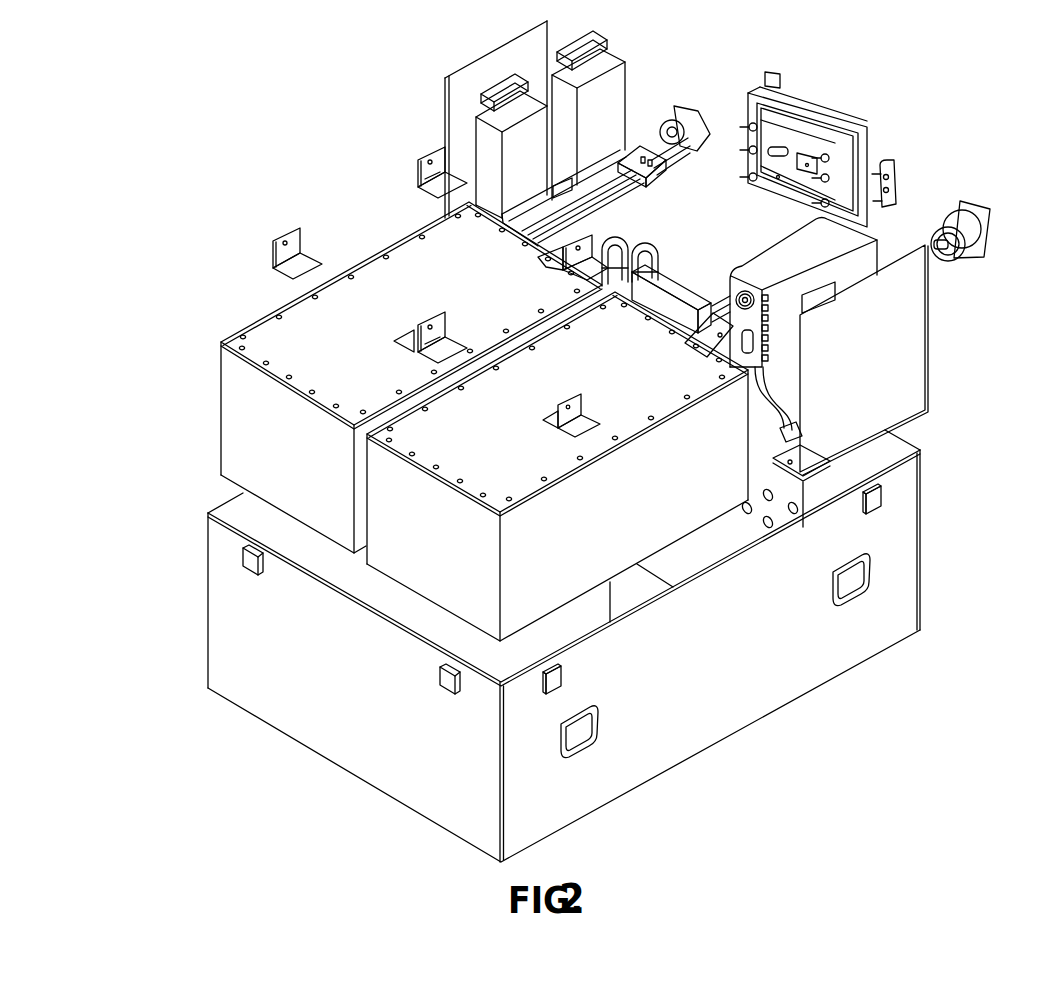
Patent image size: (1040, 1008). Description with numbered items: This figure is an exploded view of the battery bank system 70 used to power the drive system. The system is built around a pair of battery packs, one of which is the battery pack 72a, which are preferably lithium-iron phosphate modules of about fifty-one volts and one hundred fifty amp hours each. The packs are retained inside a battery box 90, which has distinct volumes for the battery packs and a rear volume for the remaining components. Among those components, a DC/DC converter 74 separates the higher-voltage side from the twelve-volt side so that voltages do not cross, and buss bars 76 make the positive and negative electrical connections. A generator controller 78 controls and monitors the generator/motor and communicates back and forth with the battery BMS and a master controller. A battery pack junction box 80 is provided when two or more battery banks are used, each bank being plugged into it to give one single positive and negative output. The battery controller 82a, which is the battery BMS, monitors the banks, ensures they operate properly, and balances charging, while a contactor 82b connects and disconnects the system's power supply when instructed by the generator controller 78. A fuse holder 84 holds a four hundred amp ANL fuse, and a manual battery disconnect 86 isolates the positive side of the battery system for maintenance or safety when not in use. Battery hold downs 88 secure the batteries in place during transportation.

The battery bank system 70 is at (266, 124).
The battery pack 72a is at (233, 423).
The DC/DC converter 74 is at (672, 293).
The buss bars 76 is at (495, 100).
The generator controller 78 is at (778, 95).
The battery pack junction box 80 is at (603, 258).
The battery controller 82a is at (847, 277).
The contactor 82b is at (688, 96).
The fuse holder 84 is at (895, 172).
The manual battery disconnect 86 is at (994, 218).
The battery hold downs 88 is at (423, 168).
The battery box 90 is at (232, 640).